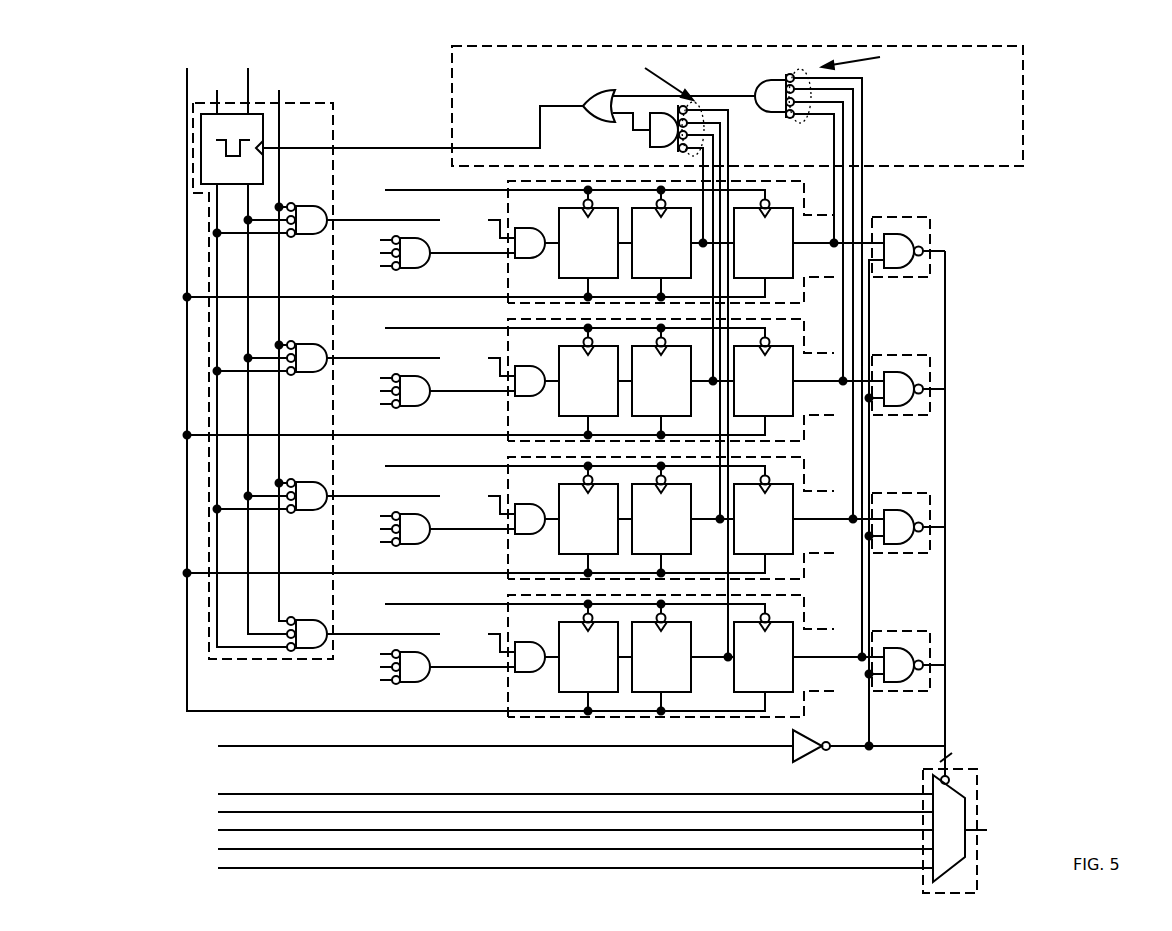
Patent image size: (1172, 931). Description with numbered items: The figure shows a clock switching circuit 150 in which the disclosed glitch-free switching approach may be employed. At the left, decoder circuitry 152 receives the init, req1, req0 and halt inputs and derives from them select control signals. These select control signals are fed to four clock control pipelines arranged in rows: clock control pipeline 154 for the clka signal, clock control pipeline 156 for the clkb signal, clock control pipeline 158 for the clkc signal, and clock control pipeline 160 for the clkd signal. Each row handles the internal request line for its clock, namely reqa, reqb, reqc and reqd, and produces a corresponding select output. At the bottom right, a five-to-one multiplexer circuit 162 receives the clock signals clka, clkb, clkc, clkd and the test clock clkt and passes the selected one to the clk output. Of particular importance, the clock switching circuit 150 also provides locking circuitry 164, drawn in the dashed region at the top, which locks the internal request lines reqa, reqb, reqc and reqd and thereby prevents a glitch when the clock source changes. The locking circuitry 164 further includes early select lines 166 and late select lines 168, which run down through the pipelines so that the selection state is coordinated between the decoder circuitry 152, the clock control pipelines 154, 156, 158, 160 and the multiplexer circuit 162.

The clock switching circuit 150 is at (96, 130).
The decoder circuitry 152 is at (209, 392).
The clock control pipeline 154 is at (877, 216).
The clock control pipeline 156 is at (877, 354).
The clock control pipeline 158 is at (877, 492).
The clock control pipeline 160 is at (877, 630).
The 5-to-1 multiplexer circuit 162 is at (976, 793).
The locking circuitry 164 is at (747, 121).
The early select lines 166 is at (522, 75).
The late select lines 168 is at (947, 78).